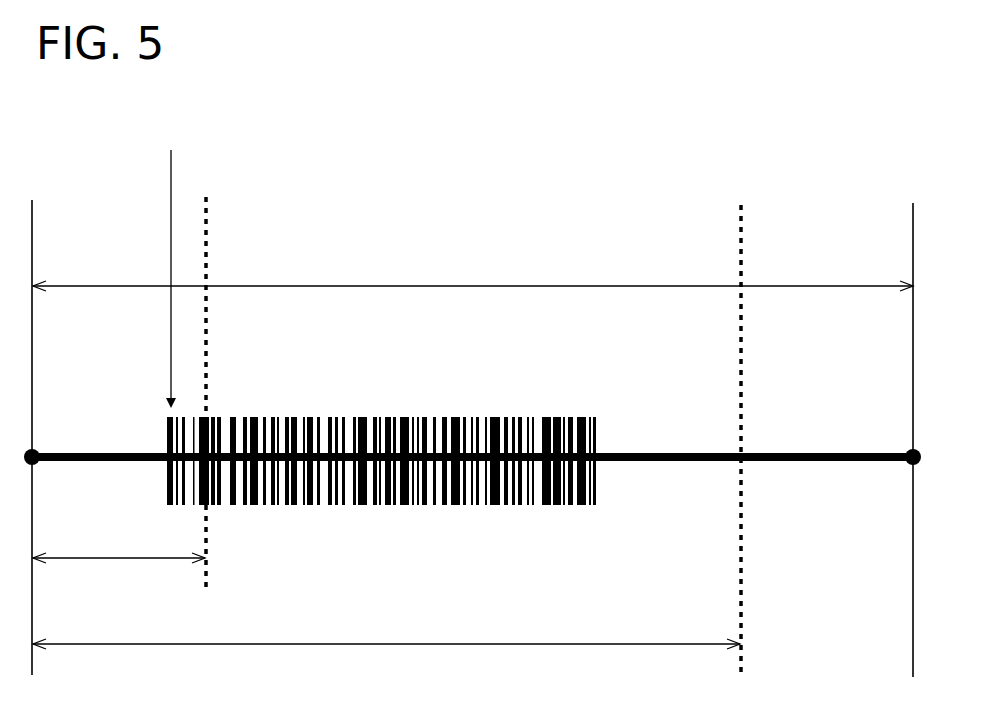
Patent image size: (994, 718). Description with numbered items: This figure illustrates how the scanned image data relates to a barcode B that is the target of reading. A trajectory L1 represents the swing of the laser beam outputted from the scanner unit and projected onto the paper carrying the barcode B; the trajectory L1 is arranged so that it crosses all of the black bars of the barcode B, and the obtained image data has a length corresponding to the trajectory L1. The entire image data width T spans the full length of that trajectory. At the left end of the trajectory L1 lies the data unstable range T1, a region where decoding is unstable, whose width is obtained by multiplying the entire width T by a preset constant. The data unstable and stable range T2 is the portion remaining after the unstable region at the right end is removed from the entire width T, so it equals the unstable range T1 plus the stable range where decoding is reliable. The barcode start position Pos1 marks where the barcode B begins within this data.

The barcode start position Pos1 is at (172, 266).
The entire image data width T is at (473, 274).
The data unstable range T1 is at (119, 546).
The data unstable and stable range T2 is at (386, 633).
The barcode B is at (543, 417).
The trajectory L1 is at (808, 455).